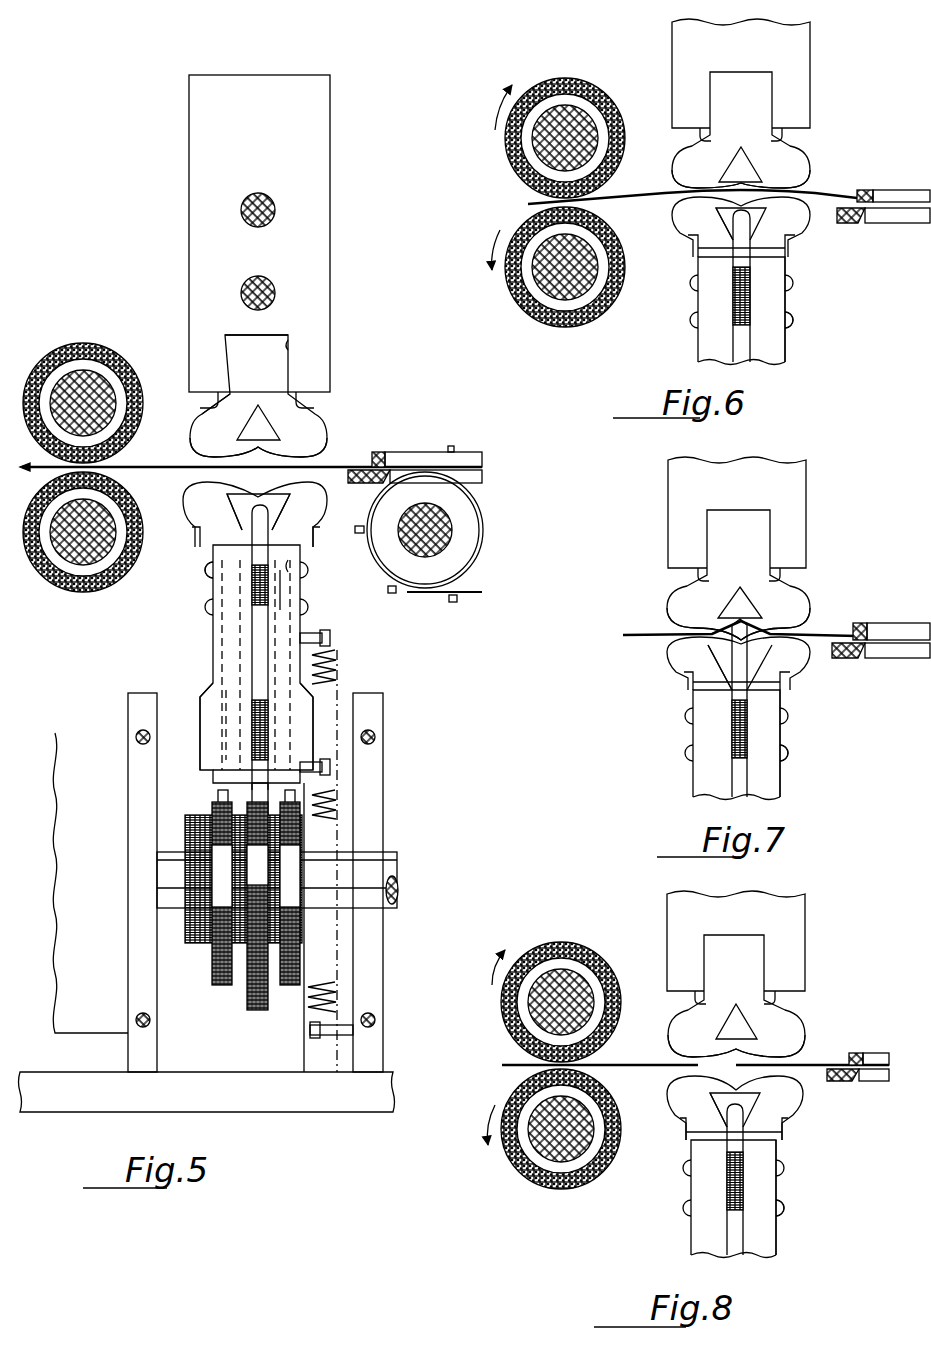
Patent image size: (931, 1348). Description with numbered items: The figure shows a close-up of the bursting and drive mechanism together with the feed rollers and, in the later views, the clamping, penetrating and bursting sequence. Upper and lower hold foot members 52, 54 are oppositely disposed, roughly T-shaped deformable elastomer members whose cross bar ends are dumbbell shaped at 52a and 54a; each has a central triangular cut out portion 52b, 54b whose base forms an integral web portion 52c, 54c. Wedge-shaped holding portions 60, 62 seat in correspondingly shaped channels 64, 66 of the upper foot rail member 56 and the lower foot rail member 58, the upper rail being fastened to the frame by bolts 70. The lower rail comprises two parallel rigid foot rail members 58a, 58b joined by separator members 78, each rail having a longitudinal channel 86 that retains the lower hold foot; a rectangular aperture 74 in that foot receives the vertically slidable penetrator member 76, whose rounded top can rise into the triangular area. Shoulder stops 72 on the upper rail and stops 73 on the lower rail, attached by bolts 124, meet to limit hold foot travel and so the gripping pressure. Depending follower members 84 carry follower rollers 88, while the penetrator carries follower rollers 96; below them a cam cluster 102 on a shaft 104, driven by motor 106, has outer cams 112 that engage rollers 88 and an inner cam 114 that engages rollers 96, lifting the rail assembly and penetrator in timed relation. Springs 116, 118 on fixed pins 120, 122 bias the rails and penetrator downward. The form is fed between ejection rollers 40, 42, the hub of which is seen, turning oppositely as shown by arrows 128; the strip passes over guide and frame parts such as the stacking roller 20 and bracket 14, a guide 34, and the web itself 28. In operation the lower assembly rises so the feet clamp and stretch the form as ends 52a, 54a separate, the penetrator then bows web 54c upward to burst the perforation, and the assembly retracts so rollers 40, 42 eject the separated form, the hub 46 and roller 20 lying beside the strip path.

In FIG. 5, the bracket 14 is at (472, 594).
In FIG. 5, the roller 20 is at (458, 530).
In FIG. 5, the strip 28 is at (412, 463).
In FIG. 6, the strip 28 is at (850, 192).
In FIG. 7, the strip 28 is at (640, 634).
In FIG. 8, the strip 28 is at (846, 1062).
In FIG. 5, the guide bracket 34 is at (415, 464).
In FIG. 6, the guide bracket 34 is at (883, 210).
In FIG. 7, the guide bracket 34 is at (880, 660).
In FIG. 8, the guide bracket 34 is at (872, 1083).
In FIG. 5, the ejection roller 40 is at (53, 350).
In FIG. 6, the ejection roller 40 is at (583, 80).
In FIG. 8, the ejection roller 40 is at (548, 942).
In FIG. 5, the ejection roller 42 is at (52, 585).
In FIG. 6, the ejection roller 42 is at (568, 328).
In FIG. 8, the ejection roller 42 is at (565, 1192).
In FIG. 5, the roller hub 46 is at (90, 380).
In FIG. 6, the roller hub 46 is at (592, 118).
In FIG. 8, the roller hub 46 is at (578, 975).
In FIG. 5, the upper hold foot member 52 is at (272, 373).
In FIG. 6, the upper hold foot member 52 is at (755, 88).
In FIG. 7, the upper hold foot member 52 is at (755, 540).
In FIG. 8, the upper hold foot member 52 is at (750, 970).
In FIG. 5, the dumbbell shaped end 52a is at (322, 440).
In FIG. 6, the dumbbell shaped end 52a is at (800, 170).
In FIG. 7, the dumbbell shaped end 52a is at (800, 605).
In FIG. 8, the dumbbell shaped end 52a is at (795, 1040).
In FIG. 5, the triangular cut out portion 52b is at (245, 420).
In FIG. 5, the web portion 52c is at (262, 440).
In FIG. 6, the web portion 52c is at (722, 178).
In FIG. 7, the web portion 52c is at (722, 614).
In FIG. 8, the web portion 52c is at (720, 1039).
In FIG. 5, the lower hold foot member 54 is at (300, 503).
In FIG. 6, the lower hold foot member 54 is at (808, 225).
In FIG. 7, the lower hold foot member 54 is at (806, 663).
In FIG. 8, the lower hold foot member 54 is at (790, 1105).
In FIG. 5, the dumbbell shaped end 54a is at (312, 512).
In FIG. 6, the dumbbell shaped end 54a is at (690, 222).
In FIG. 7, the dumbbell shaped end 54a is at (705, 658).
In FIG. 8, the dumbbell shaped end 54a is at (690, 1110).
In FIG. 5, the triangular cut out portion 54b is at (232, 508).
In FIG. 5, the web portion 54c is at (225, 493).
In FIG. 6, the web portion 54c is at (700, 218).
In FIG. 7, the web portion 54c is at (690, 663).
In FIG. 8, the web portion 54c is at (690, 1092).
In FIG. 5, the upper foot rail member 56 is at (189, 134).
In FIG. 6, the upper foot rail member 56 is at (800, 32).
In FIG. 7, the upper foot rail member 56 is at (800, 478).
In FIG. 8, the upper foot rail member 56 is at (795, 910).
In FIG. 5, the lower foot rail member 58 is at (222, 738).
In FIG. 6, the lower foot rail member 58 is at (760, 300).
In FIG. 7, the lower foot rail member 58 is at (760, 735).
In FIG. 8, the lower foot rail member 58 is at (755, 1185).
In FIG. 5, the foot rail member 58a is at (302, 702).
In FIG. 6, the foot rail member 58a is at (775, 352).
In FIG. 7, the foot rail member 58a is at (772, 785).
In FIG. 8, the foot rail member 58a is at (770, 1245).
In FIG. 5, the foot rail member 58b is at (218, 702).
In FIG. 6, the foot rail member 58b is at (706, 358).
In FIG. 7, the foot rail member 58b is at (705, 792).
In FIG. 8, the foot rail member 58b is at (700, 1250).
In FIG. 5, the wedge-shaped holding portion 60 is at (240, 345).
In FIG. 5, the wedge-shaped holding portion 62 is at (294, 590).
In FIG. 5, the channel 64 is at (289, 348).
In FIG. 5, the channel 66 is at (292, 568).
In FIG. 5, the bolts 70 is at (268, 276).
In FIG. 5, the shoulder stop 72 is at (202, 406).
In FIG. 6, the shoulder stop 72 is at (683, 134).
In FIG. 7, the shoulder stop 72 is at (675, 572).
In FIG. 8, the shoulder stop 72 is at (677, 992).
In FIG. 5, the stop 73 is at (210, 560).
In FIG. 6, the stop 73 is at (795, 243).
In FIG. 7, the stop 73 is at (690, 700).
In FIG. 8, the stop 73 is at (790, 1137).
In FIG. 5, the aperture 74 is at (198, 538).
In FIG. 6, the aperture 74 is at (715, 250).
In FIG. 7, the aperture 74 is at (710, 690).
In FIG. 8, the aperture 74 is at (712, 1135).
In FIG. 5, the penetrator member 76 is at (250, 628).
In FIG. 6, the penetrator member 76 is at (740, 335).
In FIG. 7, the penetrator member 76 is at (738, 770).
In FIG. 8, the penetrator member 76 is at (737, 1225).
In FIG. 5, the separator member 78 is at (258, 580).
In FIG. 6, the separator member 78 is at (734, 300).
In FIG. 7, the separator member 78 is at (733, 720).
In FIG. 8, the separator member 78 is at (730, 1182).
In FIG. 5, the follower member 84 is at (310, 742).
In FIG. 5, the longitudinal channel 86 is at (232, 690).
In FIG. 5, the follower roller 88 is at (218, 797).
In FIG. 5, the follower roller 96 is at (200, 822).
In FIG. 5, the cam cluster 102 is at (202, 980).
In FIG. 5, the shaft 104 is at (394, 905).
In FIG. 5, the motor 106 is at (75, 735).
In FIG. 5, the cam 112 is at (222, 988).
In FIG. 5, the cam 114 is at (257, 1012).
In FIG. 5, the spring 116 is at (337, 992).
In FIG. 5, the spring 118 is at (337, 668).
In FIG. 5, the pin 120 is at (332, 768).
In FIG. 5, the pin 122 is at (332, 640).
In FIG. 5, the bolts 124 is at (210, 612).
In FIG. 6, the bolts 124 is at (793, 320).
In FIG. 7, the bolts 124 is at (788, 752).
In FIG. 8, the bolts 124 is at (785, 1212).
In FIG. 6, the arrows 128 is at (500, 156).
In FIG. 8, the arrows 128 is at (485, 1052).